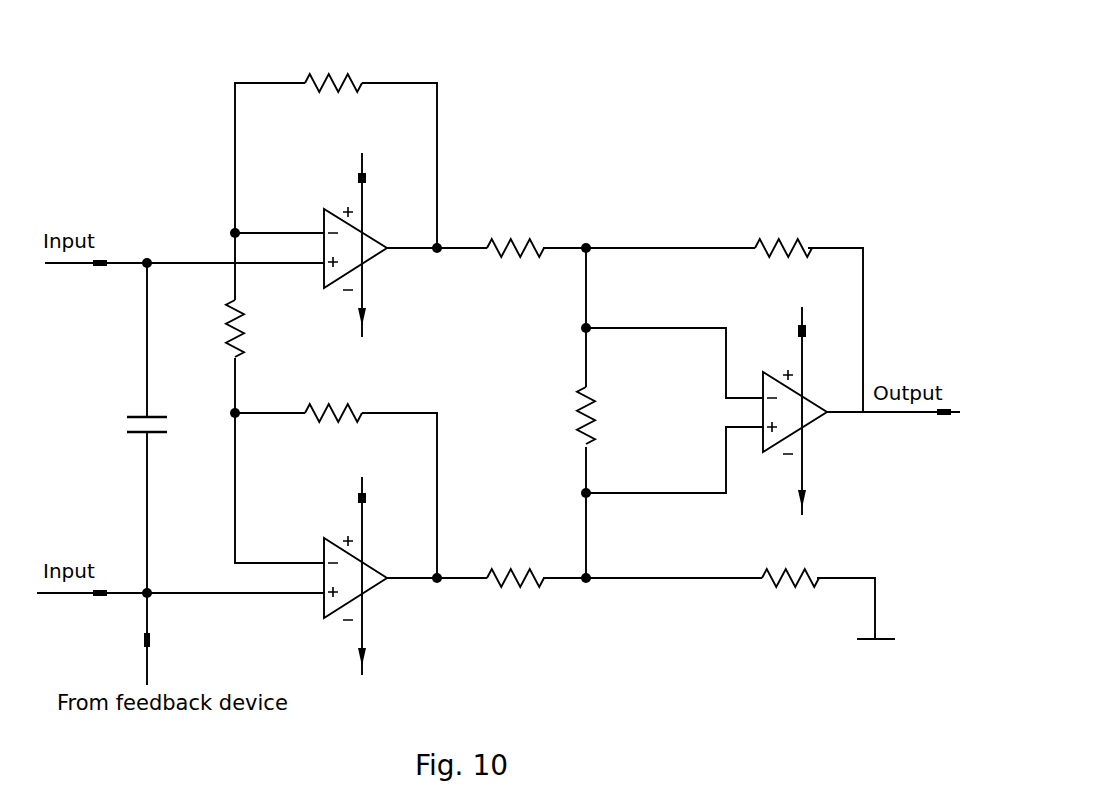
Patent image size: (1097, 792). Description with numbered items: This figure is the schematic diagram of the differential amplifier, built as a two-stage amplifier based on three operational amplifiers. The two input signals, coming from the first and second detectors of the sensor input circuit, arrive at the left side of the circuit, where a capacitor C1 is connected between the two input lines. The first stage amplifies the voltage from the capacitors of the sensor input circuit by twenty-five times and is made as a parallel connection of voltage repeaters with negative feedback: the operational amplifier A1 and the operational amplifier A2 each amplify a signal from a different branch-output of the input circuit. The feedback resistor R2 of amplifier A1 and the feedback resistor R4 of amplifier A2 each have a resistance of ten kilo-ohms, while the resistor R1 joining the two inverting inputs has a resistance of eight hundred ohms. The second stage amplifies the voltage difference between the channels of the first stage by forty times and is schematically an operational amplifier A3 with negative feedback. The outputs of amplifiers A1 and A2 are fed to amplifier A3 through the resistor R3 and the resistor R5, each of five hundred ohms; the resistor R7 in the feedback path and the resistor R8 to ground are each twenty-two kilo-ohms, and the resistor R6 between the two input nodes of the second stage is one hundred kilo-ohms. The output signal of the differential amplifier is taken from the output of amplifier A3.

The resistor R1 is at (249, 328).
The resistor R2 is at (333, 69).
The resistor R3 is at (515, 233).
The resistor R4 is at (333, 398).
The resistor R5 is at (515, 563).
The resistor R6 is at (601, 415).
The resistor R7 is at (783, 233).
The resistor R8 is at (790, 564).
The capacitor C1 is at (162, 426).
The operational amplifier A1 is at (372, 224).
The operational amplifier A2 is at (363, 556).
The operational amplifier A3 is at (808, 393).